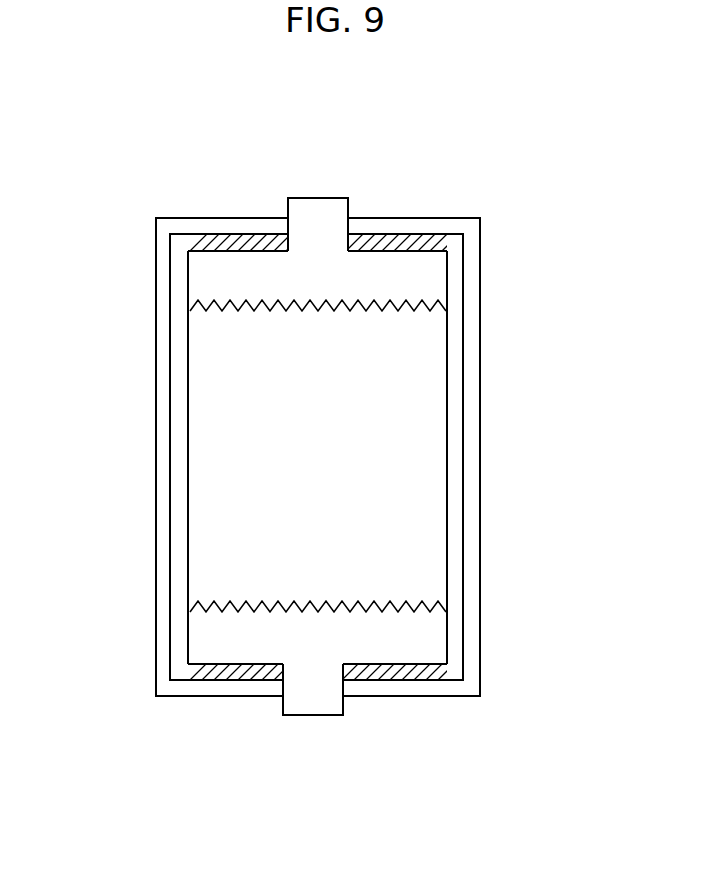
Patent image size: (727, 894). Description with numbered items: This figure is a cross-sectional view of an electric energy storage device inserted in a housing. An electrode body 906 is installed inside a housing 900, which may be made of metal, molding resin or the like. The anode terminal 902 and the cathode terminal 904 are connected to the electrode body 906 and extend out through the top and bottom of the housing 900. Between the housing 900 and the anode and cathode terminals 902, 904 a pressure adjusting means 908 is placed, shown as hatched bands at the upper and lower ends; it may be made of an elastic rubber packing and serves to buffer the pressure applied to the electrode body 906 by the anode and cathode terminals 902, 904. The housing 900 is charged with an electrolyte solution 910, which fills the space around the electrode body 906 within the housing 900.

The housing 900 is at (470, 445).
The anode terminal 902 is at (320, 210).
The cathode terminal 904 is at (320, 700).
The electrode body 906 is at (432, 530).
The pressure adjusting means 908 is at (413, 240).
The electrolyte solution 910 is at (180, 497).